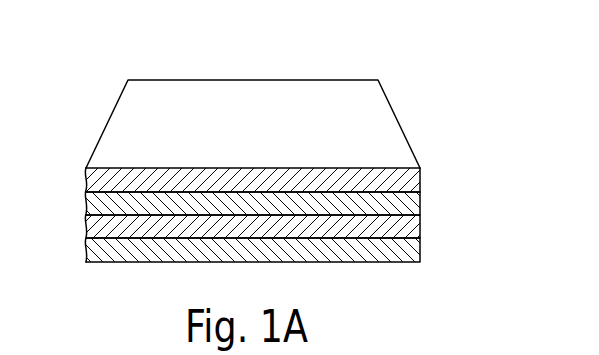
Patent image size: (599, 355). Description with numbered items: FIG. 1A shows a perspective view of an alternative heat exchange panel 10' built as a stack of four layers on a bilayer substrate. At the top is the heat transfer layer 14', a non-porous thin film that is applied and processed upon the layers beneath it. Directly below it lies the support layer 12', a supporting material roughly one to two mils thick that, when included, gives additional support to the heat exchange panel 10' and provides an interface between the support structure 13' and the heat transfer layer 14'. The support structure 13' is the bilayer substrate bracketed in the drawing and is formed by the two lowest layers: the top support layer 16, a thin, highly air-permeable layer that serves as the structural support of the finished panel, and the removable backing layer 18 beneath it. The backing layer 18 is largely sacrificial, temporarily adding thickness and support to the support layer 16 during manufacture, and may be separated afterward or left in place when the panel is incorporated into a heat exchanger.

The heat exchange panel 10' is at (263, 150).
The heat transfer layer 14' is at (275, 166).
The support layer 12' is at (278, 198).
The support structure 13' is at (261, 248).
The top support layer 16 is at (421, 226).
The removable backing layer 18 is at (421, 249).